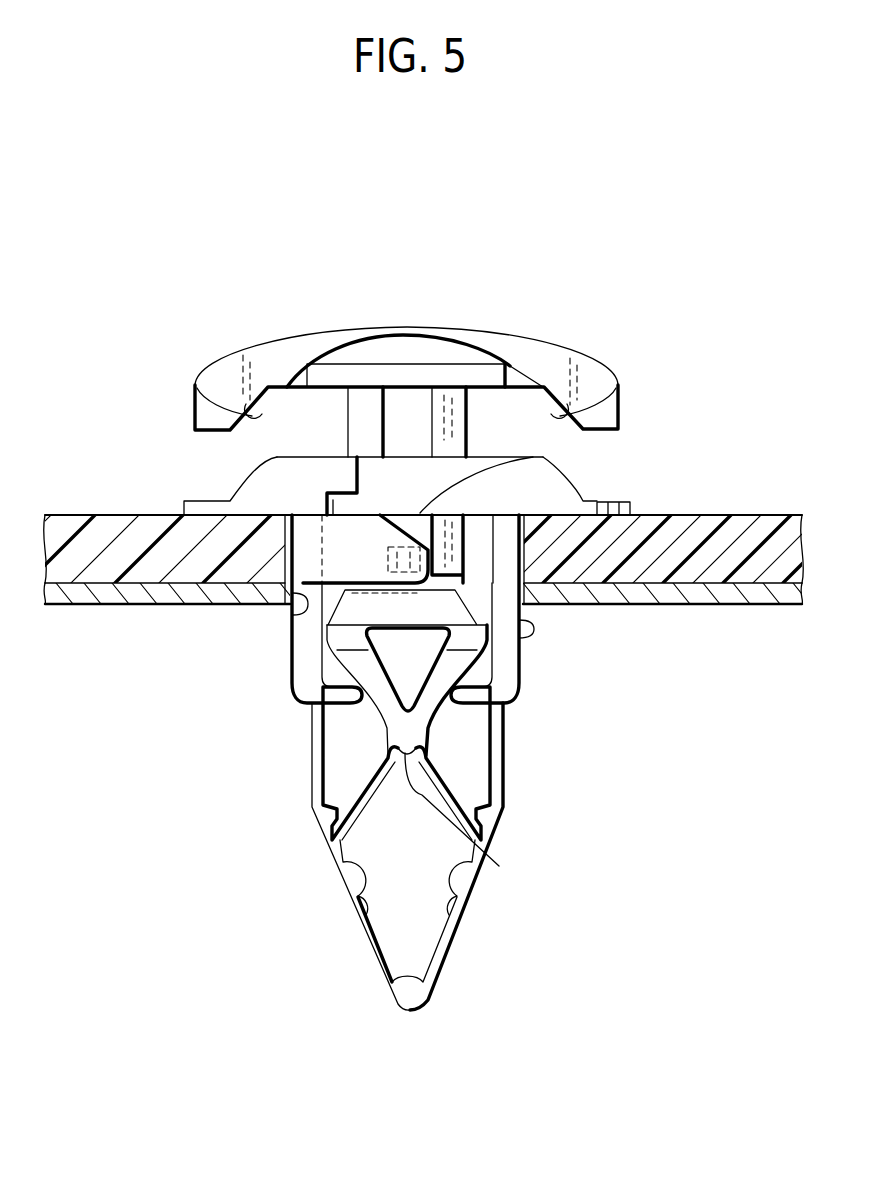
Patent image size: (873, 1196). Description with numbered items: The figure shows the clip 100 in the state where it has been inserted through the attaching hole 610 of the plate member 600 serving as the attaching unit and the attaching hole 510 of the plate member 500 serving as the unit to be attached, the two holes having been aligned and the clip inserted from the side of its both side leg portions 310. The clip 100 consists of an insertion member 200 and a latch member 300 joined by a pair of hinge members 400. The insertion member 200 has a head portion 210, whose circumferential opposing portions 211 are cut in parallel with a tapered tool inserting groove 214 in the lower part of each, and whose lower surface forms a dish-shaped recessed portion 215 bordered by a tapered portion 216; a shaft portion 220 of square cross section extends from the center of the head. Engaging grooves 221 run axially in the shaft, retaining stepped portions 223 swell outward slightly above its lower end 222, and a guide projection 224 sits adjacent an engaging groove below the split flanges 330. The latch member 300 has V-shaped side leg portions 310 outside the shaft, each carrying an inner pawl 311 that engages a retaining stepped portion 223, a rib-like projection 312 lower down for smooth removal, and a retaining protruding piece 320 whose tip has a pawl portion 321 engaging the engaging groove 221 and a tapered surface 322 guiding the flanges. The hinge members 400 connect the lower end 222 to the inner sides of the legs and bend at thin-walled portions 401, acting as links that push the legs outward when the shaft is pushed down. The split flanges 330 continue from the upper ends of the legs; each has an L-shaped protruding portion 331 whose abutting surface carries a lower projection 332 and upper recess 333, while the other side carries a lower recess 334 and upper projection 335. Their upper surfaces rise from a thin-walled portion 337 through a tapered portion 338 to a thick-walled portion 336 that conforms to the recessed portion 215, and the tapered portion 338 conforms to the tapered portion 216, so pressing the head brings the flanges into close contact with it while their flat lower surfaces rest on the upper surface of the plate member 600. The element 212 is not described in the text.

The clip 100 is at (158, 268).
The insertion member 200 is at (591, 333).
The head portion 210 is at (218, 348).
The circumferential opposing portions 211 is at (550, 352).
The head inner arc 212 is at (292, 360).
The tool inserting groove 214 is at (456, 345).
The recessed portion 215 is at (290, 355).
The tapered portion 216 is at (560, 411).
The shaft portion 220 is at (497, 352).
The engaging groove 221 is at (433, 363).
The lower end 222 is at (482, 865).
The retaining stepped portion 223 is at (470, 636).
The guide projection 224 is at (522, 604).
The latch member 300 is at (297, 893).
The side leg portions 310 is at (507, 773).
The pawl 311 is at (490, 700).
The rib-like projection 312 is at (453, 927).
The retaining protruding piece 320 is at (290, 610).
The pawl portion 321 is at (417, 593).
The tapered surface 322 is at (540, 480).
The split flanges 330 is at (587, 517).
The protruding portion 331 is at (545, 478).
The projection 332 is at (393, 358).
The recess 333 is at (349, 362).
The recess 334 is at (265, 490).
The projection 335 is at (343, 507).
The thick-walled portion 336 is at (490, 450).
The thin-walled portion 337 is at (620, 498).
The tapered portion 338 is at (582, 492).
The hinge members 400 is at (488, 793).
The thin-walled portions 401 is at (503, 817).
The plate member 500 is at (47, 611).
The attaching hole 510 is at (300, 635).
The plate member 600 is at (72, 515).
The attaching hole 610 is at (278, 586).